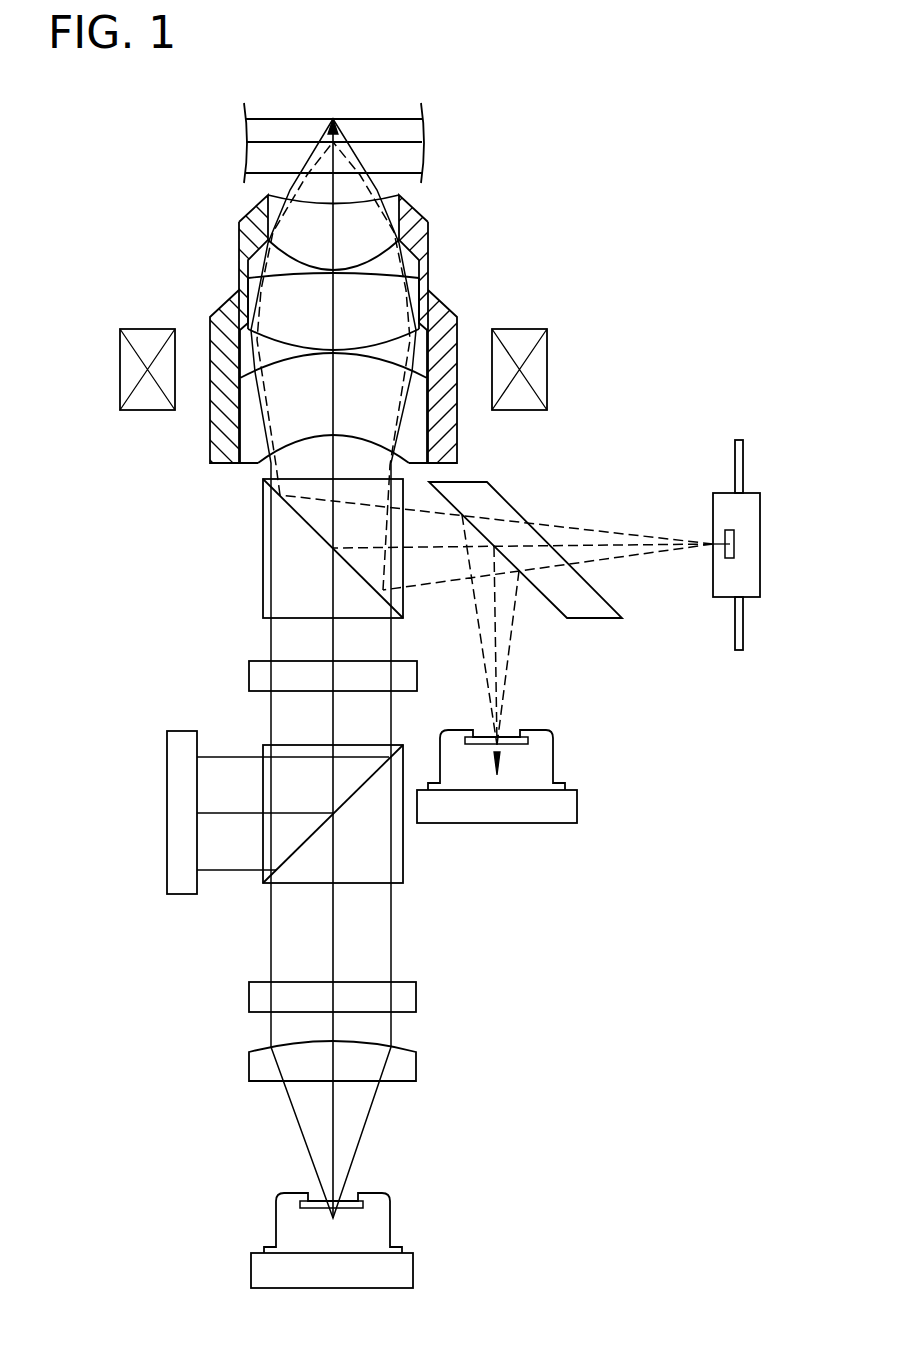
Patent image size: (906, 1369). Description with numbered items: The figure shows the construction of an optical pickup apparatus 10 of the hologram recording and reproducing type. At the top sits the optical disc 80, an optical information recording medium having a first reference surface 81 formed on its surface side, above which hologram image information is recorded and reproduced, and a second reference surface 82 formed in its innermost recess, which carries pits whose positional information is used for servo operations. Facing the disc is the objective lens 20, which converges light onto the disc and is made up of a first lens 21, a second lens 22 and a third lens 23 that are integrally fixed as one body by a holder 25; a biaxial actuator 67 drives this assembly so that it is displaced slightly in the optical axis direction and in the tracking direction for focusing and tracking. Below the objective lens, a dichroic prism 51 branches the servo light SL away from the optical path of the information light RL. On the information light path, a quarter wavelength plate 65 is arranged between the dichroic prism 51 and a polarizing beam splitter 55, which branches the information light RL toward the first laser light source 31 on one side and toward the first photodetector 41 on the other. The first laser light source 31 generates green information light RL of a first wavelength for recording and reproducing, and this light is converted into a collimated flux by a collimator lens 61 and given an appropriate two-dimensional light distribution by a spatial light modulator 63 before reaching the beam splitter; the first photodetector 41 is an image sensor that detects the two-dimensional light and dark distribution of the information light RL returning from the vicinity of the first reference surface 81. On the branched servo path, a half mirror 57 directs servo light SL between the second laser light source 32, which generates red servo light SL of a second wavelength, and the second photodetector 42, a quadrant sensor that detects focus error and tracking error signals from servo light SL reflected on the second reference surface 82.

The optical pickup apparatus 10 is at (647, 94).
The objective lens 20 is at (446, 227).
The first lens 21 is at (241, 441).
The second lens 22 is at (250, 303).
The third lens 23 is at (262, 213).
The holder 25 is at (455, 313).
The first laser light source 31 is at (379, 1219).
The second laser light source 32 is at (540, 766).
The first photodetector 41 is at (181, 887).
The second photodetector 42 is at (724, 497).
The dichroic prism 51 is at (263, 556).
The polarizing beam splitter 55 is at (404, 866).
The half mirror 57 is at (503, 496).
The collimator lens 61 is at (414, 1066).
The spatial light modulator 63 is at (416, 996).
The quarter wavelength plate 65 is at (249, 676).
The biaxial actuator 67 is at (123, 368).
The optical disc 80 is at (456, 128).
The first reference surface 81 is at (405, 149).
The second reference surface 82 is at (406, 125).
The information light RL is at (268, 639).
The servo light SL is at (444, 584).